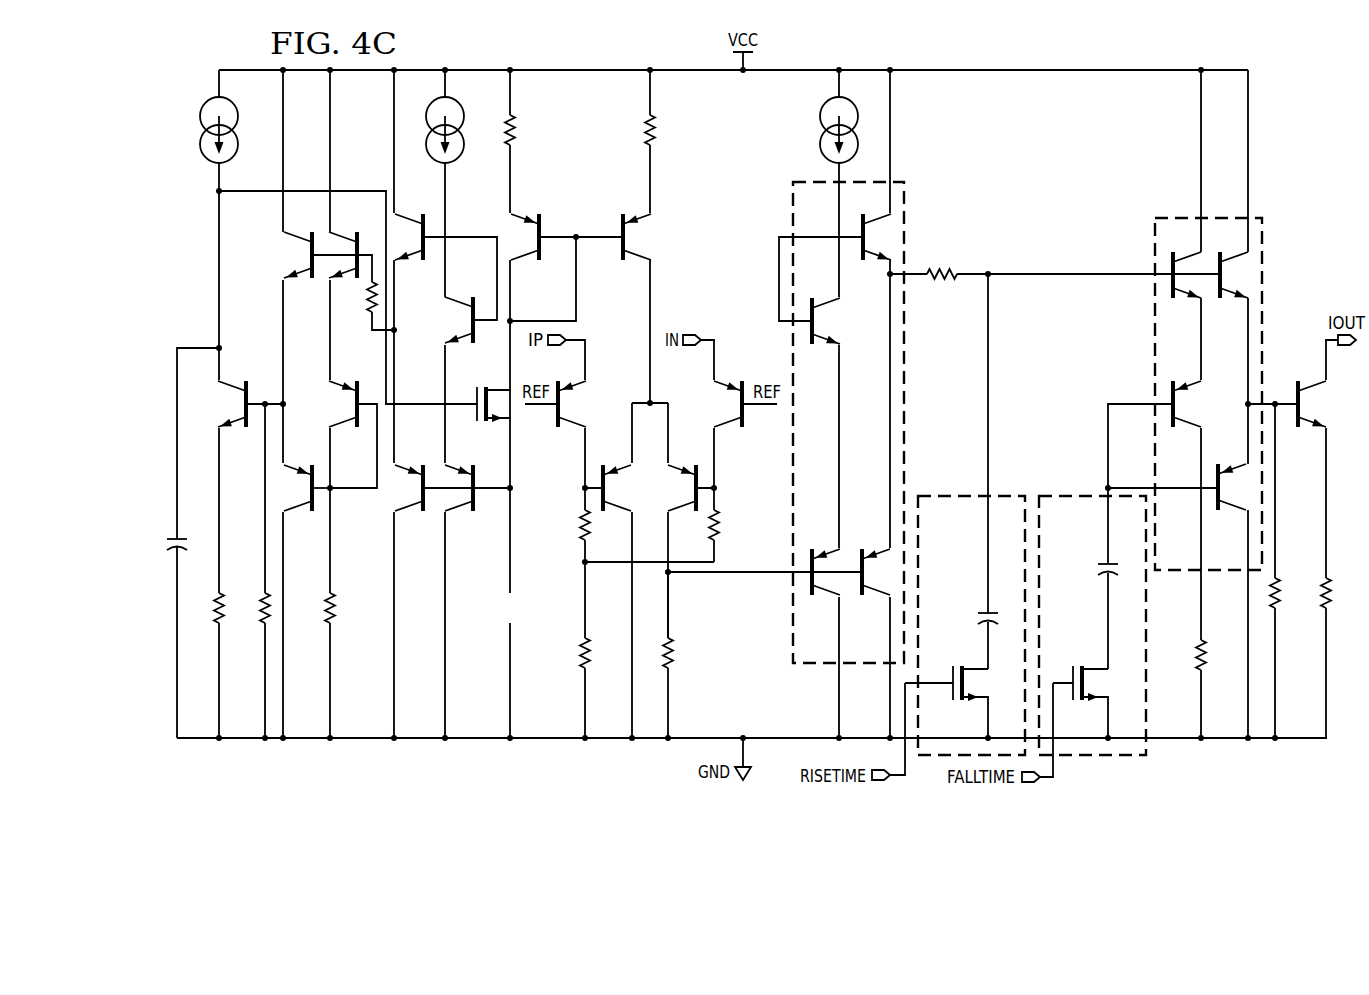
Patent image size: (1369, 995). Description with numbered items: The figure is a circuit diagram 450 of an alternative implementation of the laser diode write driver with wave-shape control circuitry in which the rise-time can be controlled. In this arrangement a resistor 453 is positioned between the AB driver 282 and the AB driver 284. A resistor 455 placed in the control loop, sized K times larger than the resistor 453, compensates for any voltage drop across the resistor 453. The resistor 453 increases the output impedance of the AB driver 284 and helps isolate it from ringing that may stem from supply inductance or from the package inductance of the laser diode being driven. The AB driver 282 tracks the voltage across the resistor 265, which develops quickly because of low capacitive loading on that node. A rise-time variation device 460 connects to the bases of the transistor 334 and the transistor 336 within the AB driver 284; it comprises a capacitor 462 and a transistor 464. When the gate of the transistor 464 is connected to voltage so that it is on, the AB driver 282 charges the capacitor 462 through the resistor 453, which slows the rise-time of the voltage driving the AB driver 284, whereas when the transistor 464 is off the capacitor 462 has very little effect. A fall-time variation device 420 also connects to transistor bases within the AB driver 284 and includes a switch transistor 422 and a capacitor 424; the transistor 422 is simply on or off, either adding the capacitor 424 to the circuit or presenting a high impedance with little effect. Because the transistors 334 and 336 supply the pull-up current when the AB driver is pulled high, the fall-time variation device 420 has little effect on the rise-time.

The circuit diagram 450 is at (1294, 66).
The resistor 455 is at (369, 312).
The resistor 265 is at (675, 655).
The AB driver 282 is at (912, 236).
The resistor 453 is at (944, 283).
The rise-time variation device 460 is at (965, 514).
The capacitor 462 is at (978, 614).
The transistor 464 is at (953, 666).
The fall-time variation device 420 is at (1092, 598).
The capacitor 424 is at (1099, 568).
The transistor 422 is at (1073, 666).
The AB driver 284 is at (1220, 404).
The transistor 334 is at (1172, 291).
The transistor 336 is at (1219, 291).